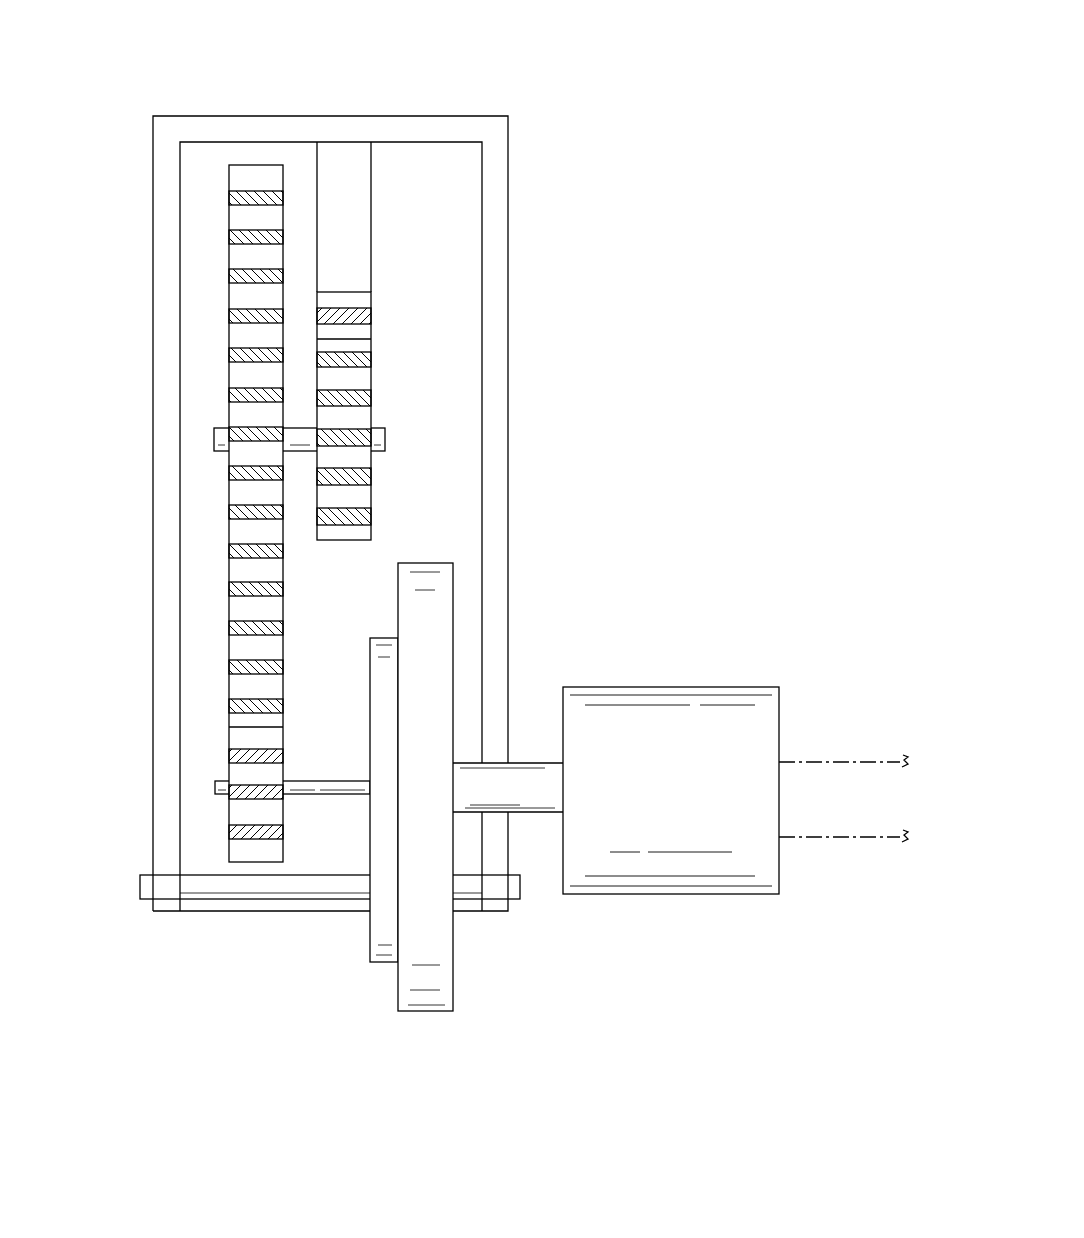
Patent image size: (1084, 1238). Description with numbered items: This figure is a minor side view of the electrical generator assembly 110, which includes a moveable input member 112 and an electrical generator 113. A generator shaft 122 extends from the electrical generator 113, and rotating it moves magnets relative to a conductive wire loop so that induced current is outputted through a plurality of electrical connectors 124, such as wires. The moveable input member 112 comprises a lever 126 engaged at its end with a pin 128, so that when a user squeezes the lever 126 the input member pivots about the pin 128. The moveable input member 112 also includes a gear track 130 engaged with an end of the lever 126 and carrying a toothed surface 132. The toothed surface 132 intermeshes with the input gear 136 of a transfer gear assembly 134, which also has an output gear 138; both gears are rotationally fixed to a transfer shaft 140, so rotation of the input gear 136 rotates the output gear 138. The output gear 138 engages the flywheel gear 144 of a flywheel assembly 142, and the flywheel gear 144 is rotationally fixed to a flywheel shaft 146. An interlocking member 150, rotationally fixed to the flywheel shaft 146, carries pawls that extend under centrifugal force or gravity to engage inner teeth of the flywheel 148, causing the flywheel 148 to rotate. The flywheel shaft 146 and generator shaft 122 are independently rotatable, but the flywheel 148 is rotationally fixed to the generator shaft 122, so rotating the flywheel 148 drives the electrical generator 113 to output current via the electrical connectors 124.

The electrical generator assembly 110 is at (672, 52).
The moveable input member 112 is at (148, 160).
The electrical generator 113 is at (697, 894).
The generator shaft 122 is at (518, 812).
The electrical connectors 124 is at (871, 762).
The lever 126 is at (153, 712).
The pin 128 is at (140, 887).
The gear track 130 is at (345, 216).
The toothed surface 132 is at (372, 316).
The transfer gear assembly 134 is at (203, 374).
The input gear 136 is at (372, 478).
The output gear 138 is at (229, 573).
The transfer shaft 140 is at (214, 437).
The flywheel assembly 142 is at (203, 835).
The flywheel gear 144 is at (239, 862).
The flywheel shaft 146 is at (323, 794).
The flywheel 148 is at (425, 1011).
The interlocking member 150 is at (380, 962).